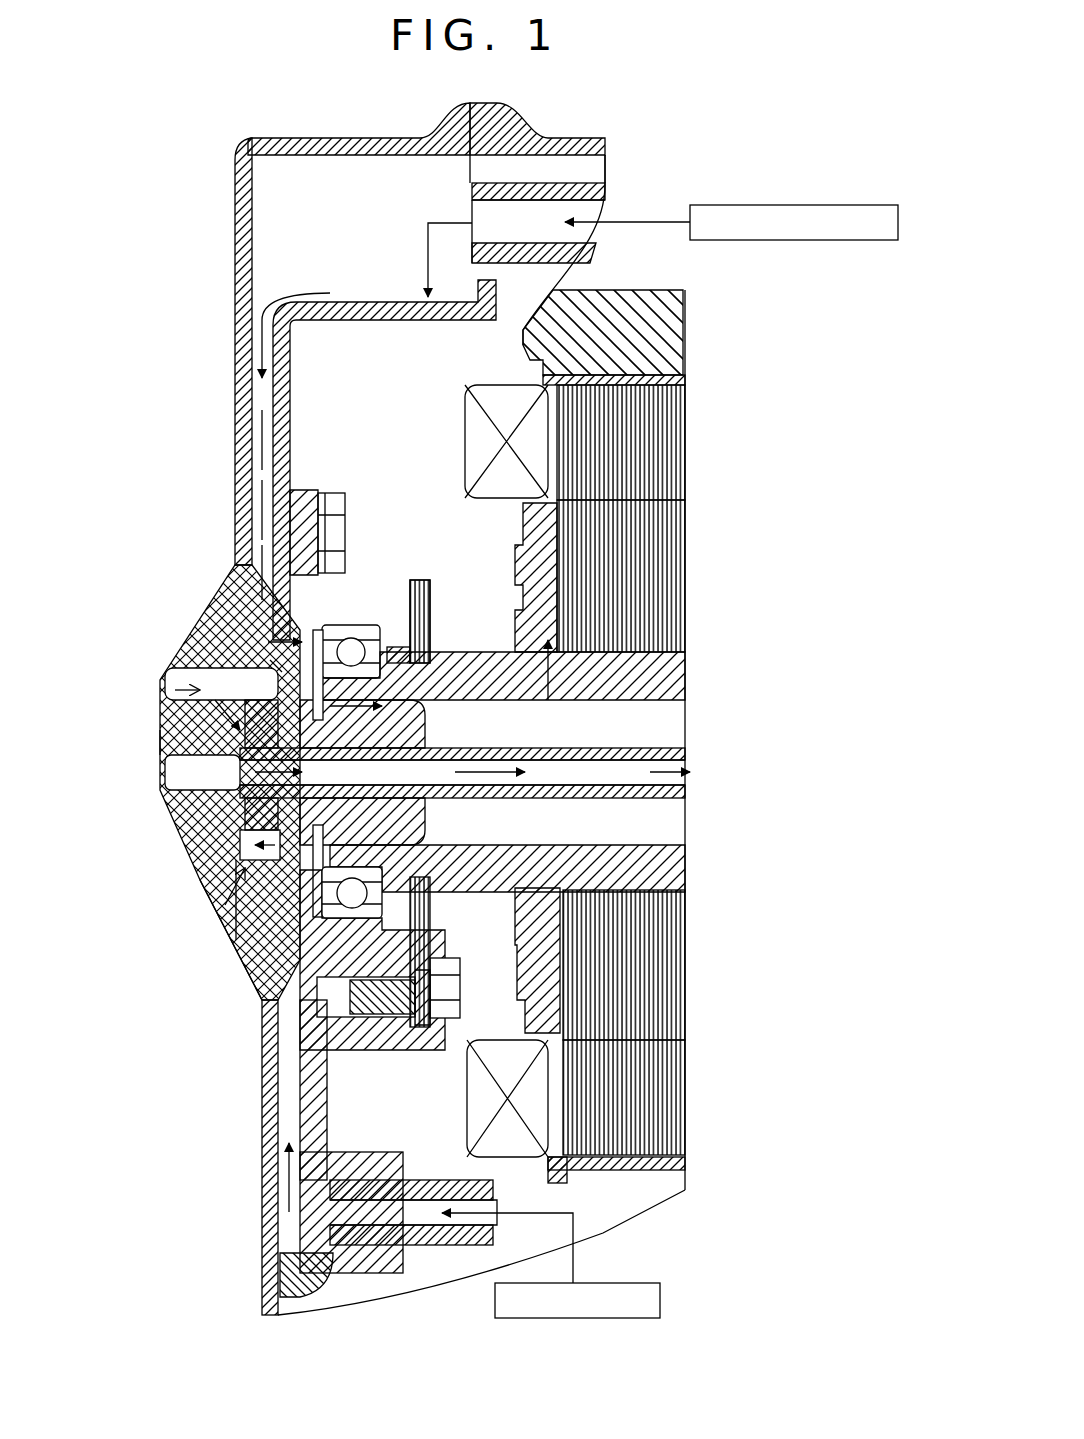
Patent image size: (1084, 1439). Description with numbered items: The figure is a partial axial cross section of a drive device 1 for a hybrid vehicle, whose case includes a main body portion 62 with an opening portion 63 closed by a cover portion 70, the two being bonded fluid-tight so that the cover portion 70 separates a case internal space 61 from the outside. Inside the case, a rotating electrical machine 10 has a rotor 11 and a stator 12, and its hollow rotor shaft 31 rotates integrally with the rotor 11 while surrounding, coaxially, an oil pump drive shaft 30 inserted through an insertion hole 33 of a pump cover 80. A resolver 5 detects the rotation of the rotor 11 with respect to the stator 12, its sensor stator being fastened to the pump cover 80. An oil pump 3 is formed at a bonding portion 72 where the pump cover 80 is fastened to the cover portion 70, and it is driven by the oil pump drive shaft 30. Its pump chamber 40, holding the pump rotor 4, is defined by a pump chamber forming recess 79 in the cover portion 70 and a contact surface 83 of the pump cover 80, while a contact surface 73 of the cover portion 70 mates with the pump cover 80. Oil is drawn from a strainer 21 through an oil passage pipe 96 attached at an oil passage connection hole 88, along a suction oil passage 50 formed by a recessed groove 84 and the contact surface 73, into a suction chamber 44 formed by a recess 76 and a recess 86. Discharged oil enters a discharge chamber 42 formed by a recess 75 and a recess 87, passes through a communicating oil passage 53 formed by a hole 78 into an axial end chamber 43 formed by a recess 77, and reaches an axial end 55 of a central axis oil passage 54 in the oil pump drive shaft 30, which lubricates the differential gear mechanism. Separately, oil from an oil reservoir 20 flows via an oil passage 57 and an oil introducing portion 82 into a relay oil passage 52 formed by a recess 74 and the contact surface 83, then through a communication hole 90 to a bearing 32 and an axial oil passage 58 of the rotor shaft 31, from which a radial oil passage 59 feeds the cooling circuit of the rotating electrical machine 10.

The drive device 1 is at (190, 283).
The oil pump 3 is at (238, 910).
The pump rotor 4 is at (262, 836).
The resolver 5 is at (433, 605).
The rotating electrical machine 10 is at (660, 365).
The rotor 11 is at (690, 555).
The stator 12 is at (690, 445).
The oil reservoir 20 is at (762, 205).
The strainer 21 is at (648, 1283).
The oil pump drive shaft 30 is at (675, 736).
The rotor shaft 31 is at (690, 668).
The bearing 32 is at (300, 965).
The insertion hole 33 is at (375, 746).
The pump chamber 40 is at (265, 885).
The discharge chamber 42 is at (178, 693).
The axial end chamber 43 is at (215, 768).
The suction chamber 44 is at (362, 842).
The suction oil passage 50 is at (290, 1050).
The relay oil passage 52 is at (273, 445).
The communicating oil passage 53 is at (240, 735).
The central axis oil passage 54 is at (688, 770).
The axial end 55 is at (262, 828).
The oil passage 57 is at (485, 213).
The axial oil passage 58 is at (420, 705).
The radial oil passage 59 is at (550, 700).
The case internal space 61 is at (415, 478).
The main body portion 62 is at (600, 135).
The opening portion 63 is at (478, 163).
The cover portion 70 is at (235, 222).
The bonding portion 72 is at (265, 640).
The contact surface 73 is at (273, 505).
The recess 74 is at (268, 402).
The recess 75 is at (232, 700).
The recess 76 is at (262, 850).
The recess 77 is at (200, 790).
The hole 78 is at (270, 707).
The pump chamber forming recess 79 is at (258, 720).
The pump cover 80 is at (318, 410).
The oil introducing portion 82 is at (368, 300).
The contact surface 83 is at (272, 1280).
The recessed groove 84 is at (290, 1080).
The recess 86 is at (330, 856).
The recess 87 is at (405, 650).
The oil passage connection hole 88 is at (320, 1190).
The communication hole 90 is at (338, 652).
The oil passage pipe 96 is at (432, 1185).